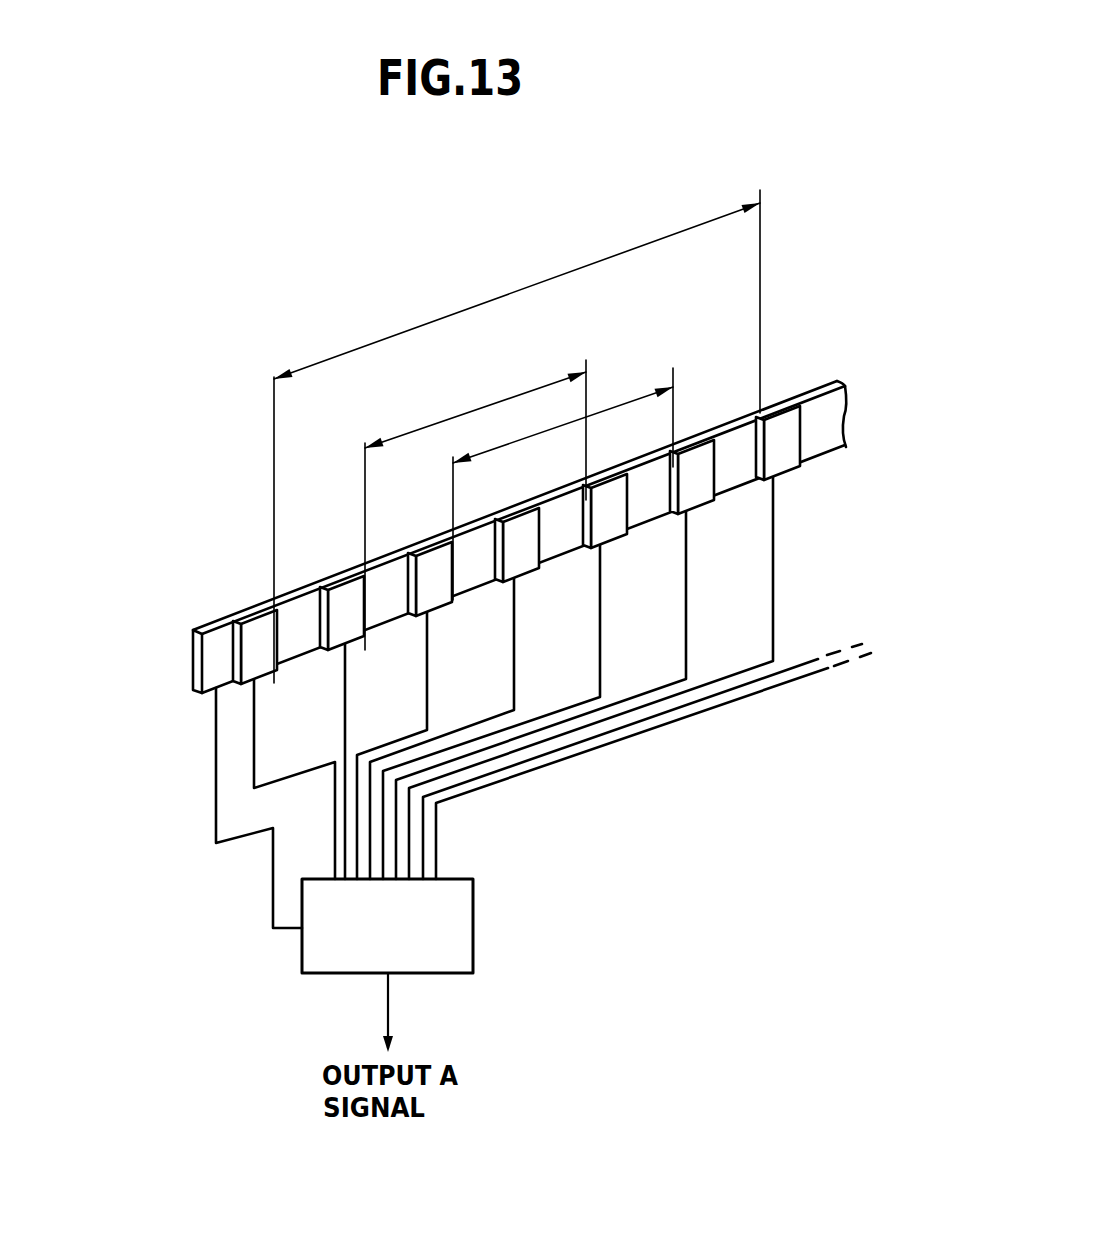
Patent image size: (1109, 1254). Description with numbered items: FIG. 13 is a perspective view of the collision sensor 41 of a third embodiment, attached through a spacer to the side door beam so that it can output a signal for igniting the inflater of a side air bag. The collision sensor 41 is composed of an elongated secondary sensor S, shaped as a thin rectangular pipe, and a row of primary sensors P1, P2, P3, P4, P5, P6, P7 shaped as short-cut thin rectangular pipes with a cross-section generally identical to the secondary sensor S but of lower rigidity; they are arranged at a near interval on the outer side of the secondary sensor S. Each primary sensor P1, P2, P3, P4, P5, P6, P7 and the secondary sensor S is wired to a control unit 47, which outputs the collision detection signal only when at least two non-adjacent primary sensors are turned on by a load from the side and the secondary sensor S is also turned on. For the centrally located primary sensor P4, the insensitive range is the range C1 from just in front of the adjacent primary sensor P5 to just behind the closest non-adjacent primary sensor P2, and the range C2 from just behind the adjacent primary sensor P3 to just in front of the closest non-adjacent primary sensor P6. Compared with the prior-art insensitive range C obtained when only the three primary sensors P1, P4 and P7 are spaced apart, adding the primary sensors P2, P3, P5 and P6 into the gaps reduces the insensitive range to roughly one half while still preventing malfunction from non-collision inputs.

The collision sensor 41 is at (784, 386).
The control unit 47 is at (460, 929).
The primary sensor P1 is at (258, 657).
The primary sensor P2 is at (350, 623).
The primary sensor P3 is at (438, 595).
The primary sensor P4 is at (525, 555).
The primary sensor P5 is at (608, 527).
The primary sensor P6 is at (698, 492).
The primary sensor P7 is at (785, 460).
The secondary sensor S is at (822, 405).
The insensitive range C is at (517, 436).
The insensitive range C1 is at (475, 505).
The insensitive range C2 is at (563, 484).